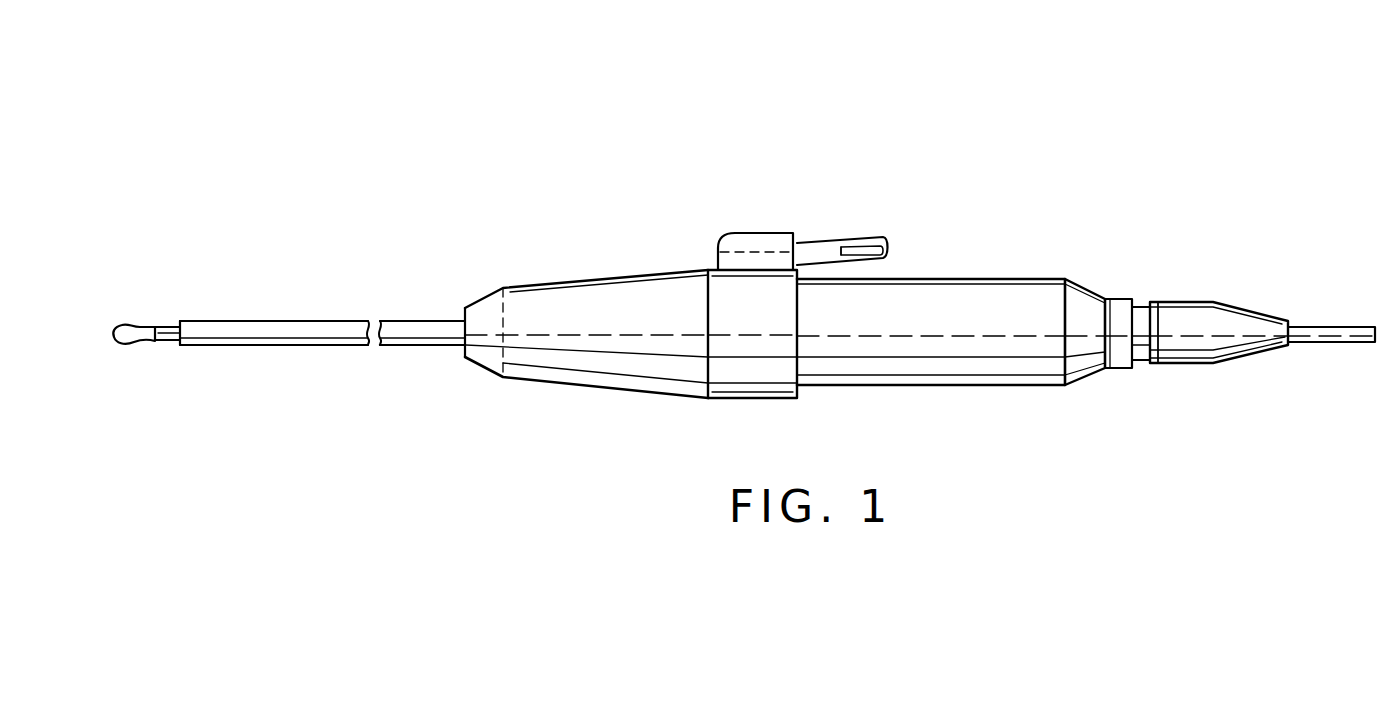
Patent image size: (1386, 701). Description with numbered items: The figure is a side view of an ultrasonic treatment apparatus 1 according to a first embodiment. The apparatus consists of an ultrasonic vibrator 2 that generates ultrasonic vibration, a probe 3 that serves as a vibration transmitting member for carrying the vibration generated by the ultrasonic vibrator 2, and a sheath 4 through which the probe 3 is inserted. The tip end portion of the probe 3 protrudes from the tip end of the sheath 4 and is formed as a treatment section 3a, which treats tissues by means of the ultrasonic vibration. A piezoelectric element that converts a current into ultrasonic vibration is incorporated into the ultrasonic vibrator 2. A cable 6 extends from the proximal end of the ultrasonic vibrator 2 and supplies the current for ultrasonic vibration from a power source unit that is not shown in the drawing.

The ultrasonic treatment apparatus 1 is at (688, 142).
The ultrasonic vibrator 2 is at (938, 296).
The probe 3 is at (162, 324).
The treatment section 3a is at (135, 350).
The sheath 4 is at (427, 299).
The cable 6 is at (1324, 333).